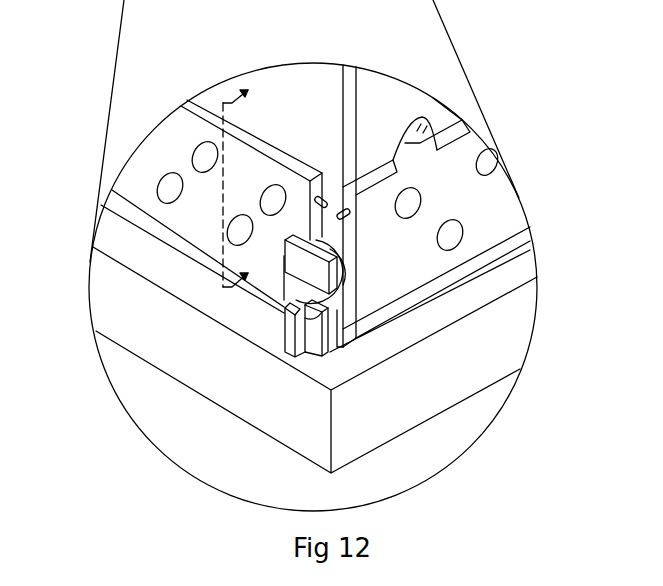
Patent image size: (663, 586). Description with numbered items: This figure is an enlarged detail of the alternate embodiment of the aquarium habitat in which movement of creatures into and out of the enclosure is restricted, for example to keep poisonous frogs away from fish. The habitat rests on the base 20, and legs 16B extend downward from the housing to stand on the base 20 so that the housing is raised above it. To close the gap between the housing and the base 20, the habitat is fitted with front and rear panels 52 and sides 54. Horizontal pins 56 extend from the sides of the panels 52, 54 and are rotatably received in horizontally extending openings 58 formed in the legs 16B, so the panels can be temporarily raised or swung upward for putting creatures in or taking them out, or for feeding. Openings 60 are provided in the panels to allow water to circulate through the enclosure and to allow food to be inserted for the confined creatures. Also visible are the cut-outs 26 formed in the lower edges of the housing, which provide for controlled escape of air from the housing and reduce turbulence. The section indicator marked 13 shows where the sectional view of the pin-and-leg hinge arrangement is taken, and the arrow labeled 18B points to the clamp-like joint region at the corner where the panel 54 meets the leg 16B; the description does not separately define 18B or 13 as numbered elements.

The base 20 is at (440, 418).
The front and rear panels 52 is at (462, 265).
The sides 54 is at (197, 217).
The cut-outs 26 is at (417, 143).
The horizontal pins 56 is at (339, 207).
The horizontally extending openings 58 is at (348, 222).
The openings 60 is at (193, 143).
The legs 16B is at (345, 335).
The clamp 18B is at (263, 319).
The section line 13- 13 is at (253, 179).